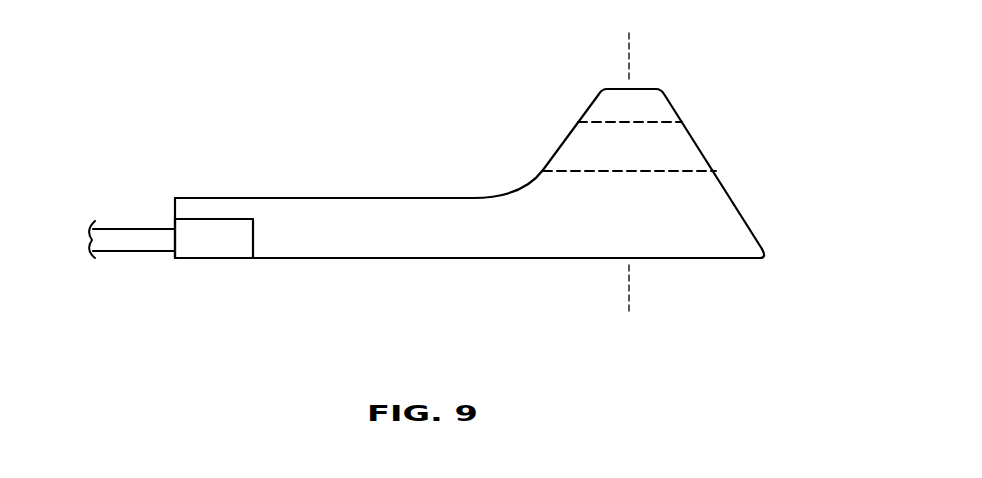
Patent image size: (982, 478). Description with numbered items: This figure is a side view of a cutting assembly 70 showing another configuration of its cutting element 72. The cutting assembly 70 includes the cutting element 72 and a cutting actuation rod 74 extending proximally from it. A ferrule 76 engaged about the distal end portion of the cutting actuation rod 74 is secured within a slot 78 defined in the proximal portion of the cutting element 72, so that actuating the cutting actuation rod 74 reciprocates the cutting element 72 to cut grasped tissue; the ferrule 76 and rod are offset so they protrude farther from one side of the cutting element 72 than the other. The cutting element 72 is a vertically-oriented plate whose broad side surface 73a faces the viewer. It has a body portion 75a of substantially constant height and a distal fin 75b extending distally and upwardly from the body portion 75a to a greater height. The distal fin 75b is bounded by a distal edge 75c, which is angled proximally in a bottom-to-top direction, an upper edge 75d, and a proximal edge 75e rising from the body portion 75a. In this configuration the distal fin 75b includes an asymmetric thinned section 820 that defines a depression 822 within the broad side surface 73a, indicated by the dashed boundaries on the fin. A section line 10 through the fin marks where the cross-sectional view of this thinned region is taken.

The cutting assembly 70 is at (284, 100).
The cutting element 72 is at (406, 176).
The broad side surface 73a is at (388, 240).
The cutting actuation rod 74 is at (142, 226).
The body portion 75a is at (470, 233).
The distal fin 75b is at (730, 231).
The distal edge 75c is at (741, 193).
The upper edge 75d is at (651, 80).
The proximal edge 75e is at (551, 148).
The ferrule 76 is at (215, 257).
The slot 78 is at (222, 219).
The asymmetric thinned section 820 is at (688, 118).
The depression 822 is at (660, 140).
The section line 10 is at (629, 33).